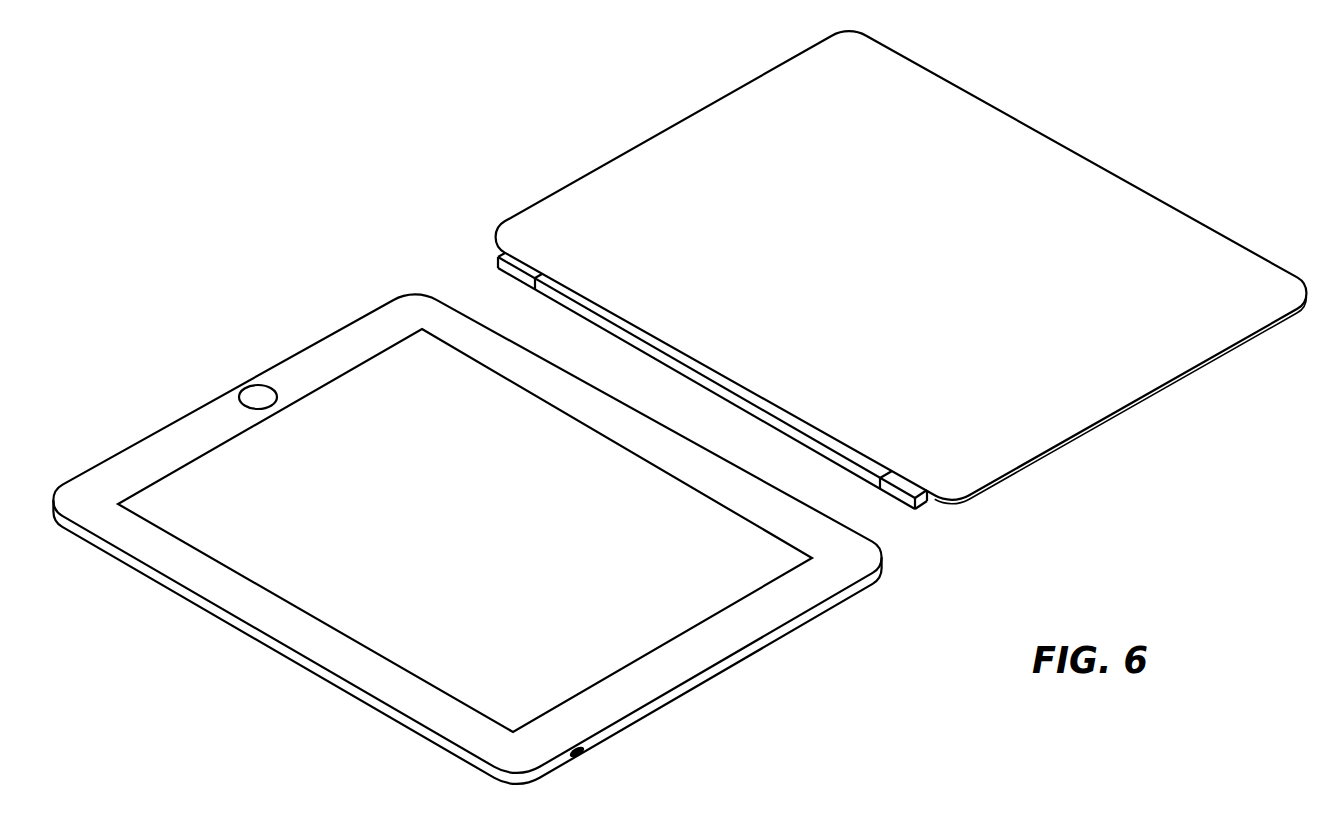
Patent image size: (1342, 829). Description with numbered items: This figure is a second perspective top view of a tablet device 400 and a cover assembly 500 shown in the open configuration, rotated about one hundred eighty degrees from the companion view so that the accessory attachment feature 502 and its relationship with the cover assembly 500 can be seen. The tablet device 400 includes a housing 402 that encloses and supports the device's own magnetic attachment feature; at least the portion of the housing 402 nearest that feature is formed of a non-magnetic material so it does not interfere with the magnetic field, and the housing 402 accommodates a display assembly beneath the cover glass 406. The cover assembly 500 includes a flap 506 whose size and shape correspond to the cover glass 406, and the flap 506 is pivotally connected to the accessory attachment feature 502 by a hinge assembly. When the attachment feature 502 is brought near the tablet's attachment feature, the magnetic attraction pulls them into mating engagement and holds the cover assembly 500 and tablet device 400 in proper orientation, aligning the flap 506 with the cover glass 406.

The tablet device 400 is at (268, 273).
The housing 402 is at (728, 662).
The cover glass 406 is at (213, 512).
The cover assembly 500 is at (521, 138).
The accessory attachment feature 502 is at (673, 368).
The flap 506 is at (752, 120).